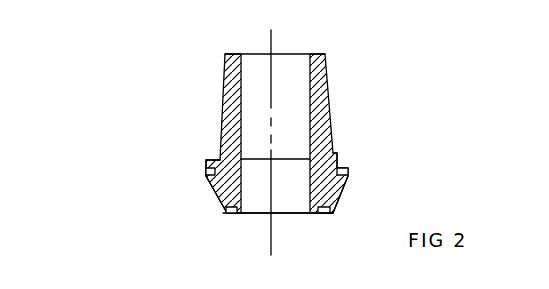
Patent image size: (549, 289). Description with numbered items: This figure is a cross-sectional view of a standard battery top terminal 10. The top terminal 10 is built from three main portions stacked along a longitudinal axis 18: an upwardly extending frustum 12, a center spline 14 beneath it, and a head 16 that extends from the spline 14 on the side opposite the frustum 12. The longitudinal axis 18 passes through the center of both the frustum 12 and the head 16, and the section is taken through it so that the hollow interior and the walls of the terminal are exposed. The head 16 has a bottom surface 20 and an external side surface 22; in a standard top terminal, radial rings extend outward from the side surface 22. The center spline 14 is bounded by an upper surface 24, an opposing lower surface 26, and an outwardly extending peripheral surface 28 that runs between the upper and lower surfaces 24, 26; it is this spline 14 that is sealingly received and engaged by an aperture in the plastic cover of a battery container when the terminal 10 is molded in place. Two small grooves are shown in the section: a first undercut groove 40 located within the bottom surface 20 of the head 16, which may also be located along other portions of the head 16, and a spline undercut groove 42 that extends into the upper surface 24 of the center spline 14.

The top terminal 10 is at (128, 108).
The frustum 12 is at (330, 116).
The center spline 14 is at (349, 181).
The head 16 is at (332, 210).
The longitudinal axis 18 is at (273, 43).
The bottom surface 20 is at (305, 215).
The external side surface 22 is at (332, 207).
The upper surface 24 is at (338, 166).
The lower surface 26 is at (213, 193).
The peripheral surface 28 is at (205, 175).
The first undercut groove 40 is at (228, 214).
The spline undercut groove 42 is at (208, 167).